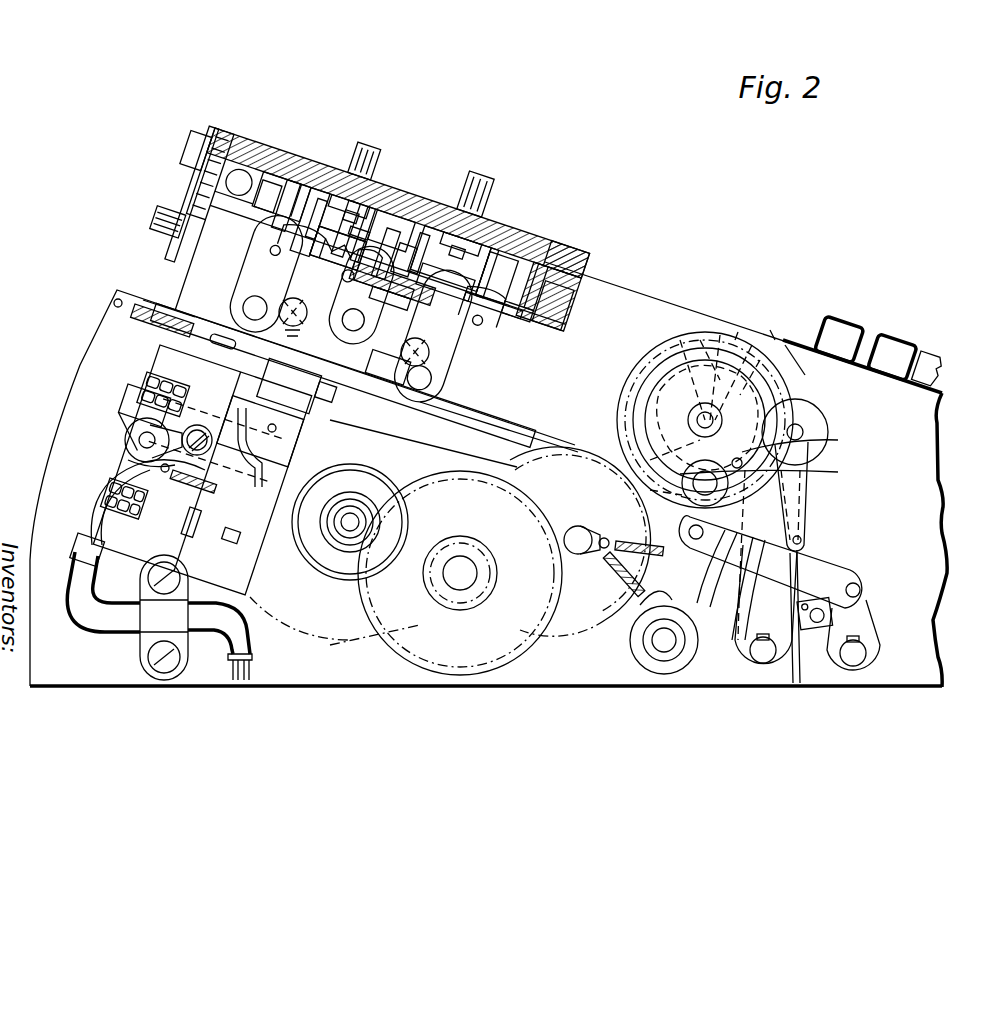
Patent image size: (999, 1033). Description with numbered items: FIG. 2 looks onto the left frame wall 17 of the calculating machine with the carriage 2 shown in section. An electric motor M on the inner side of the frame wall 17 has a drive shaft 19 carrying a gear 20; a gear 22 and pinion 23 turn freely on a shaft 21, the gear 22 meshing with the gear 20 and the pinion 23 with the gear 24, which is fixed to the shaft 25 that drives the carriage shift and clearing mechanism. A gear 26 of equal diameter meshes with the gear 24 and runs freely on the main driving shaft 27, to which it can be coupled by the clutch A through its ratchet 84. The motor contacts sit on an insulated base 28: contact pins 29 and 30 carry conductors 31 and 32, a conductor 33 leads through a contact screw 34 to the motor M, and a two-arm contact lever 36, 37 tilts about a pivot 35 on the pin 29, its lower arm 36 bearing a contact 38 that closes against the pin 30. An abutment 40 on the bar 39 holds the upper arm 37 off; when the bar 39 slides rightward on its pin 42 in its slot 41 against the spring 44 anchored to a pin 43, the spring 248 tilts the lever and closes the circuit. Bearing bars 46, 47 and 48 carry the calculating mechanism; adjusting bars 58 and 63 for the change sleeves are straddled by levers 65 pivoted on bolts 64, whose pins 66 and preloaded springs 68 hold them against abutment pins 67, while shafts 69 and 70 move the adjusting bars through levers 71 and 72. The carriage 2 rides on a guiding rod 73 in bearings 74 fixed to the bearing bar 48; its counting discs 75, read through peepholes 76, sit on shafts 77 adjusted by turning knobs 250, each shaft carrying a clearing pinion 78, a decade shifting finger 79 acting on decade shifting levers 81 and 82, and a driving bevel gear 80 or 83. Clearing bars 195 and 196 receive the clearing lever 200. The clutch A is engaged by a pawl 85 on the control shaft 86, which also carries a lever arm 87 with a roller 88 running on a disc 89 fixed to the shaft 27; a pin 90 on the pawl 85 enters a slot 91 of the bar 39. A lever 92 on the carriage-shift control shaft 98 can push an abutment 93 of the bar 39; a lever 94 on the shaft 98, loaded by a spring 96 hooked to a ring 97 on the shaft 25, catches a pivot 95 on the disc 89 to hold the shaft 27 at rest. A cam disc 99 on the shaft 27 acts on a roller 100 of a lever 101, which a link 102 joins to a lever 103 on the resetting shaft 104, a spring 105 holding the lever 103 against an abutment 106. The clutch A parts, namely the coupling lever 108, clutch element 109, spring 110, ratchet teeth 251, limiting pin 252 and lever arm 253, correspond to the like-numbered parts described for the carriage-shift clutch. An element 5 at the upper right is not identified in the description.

The carriage 2 is at (263, 133).
The keys 5 is at (945, 350).
The left frame wall 17 is at (100, 350).
The drive shaft 19 is at (345, 548).
The gear 20 is at (355, 515).
The shaft 21 is at (460, 580).
The gear 22 is at (462, 540).
The pinion 23 is at (480, 585).
The gear 24 is at (575, 620).
The shaft 25 is at (582, 545).
The gear 26 is at (640, 378).
The main driving shaft 27 is at (700, 420).
The insulated base 28 is at (143, 408).
The contact pin 29 is at (150, 385).
The contact pin 30 is at (115, 500).
The conductor 31 is at (135, 434).
The conductor 32 is at (105, 548).
The conductor 33 is at (108, 497).
The contact screw 34 is at (195, 452).
The pivot 35 is at (295, 425).
The lower lever arm 36 is at (245, 470).
The upper lever arm 37 is at (207, 460).
The contact 38 is at (225, 530).
The bar 39 is at (500, 437).
The abutment 40 is at (322, 372).
The slot 41 is at (195, 330).
The pin 42 is at (232, 343).
The pin 43 is at (112, 302).
The spring 44 is at (150, 300).
The bearing bar 46 is at (508, 290).
The bearing bar 47 is at (408, 210).
The bearing bar 48 is at (198, 228).
The adjusting bars 58 is at (495, 300).
The adjusting bars 63 is at (348, 269).
The bolts 64 is at (244, 307).
The levers 65 is at (484, 371).
The pins 66 is at (262, 262).
The abutment pins 67 is at (278, 250).
The spring 68 is at (354, 322).
The shaft 69 is at (305, 310).
The shaft 70 is at (420, 375).
The lever 71 is at (333, 245).
The lever 72 is at (394, 287).
The guiding rod 73 is at (240, 176).
The bearings 74 is at (218, 186).
The counting discs 75 is at (323, 166).
The peephole 76 is at (362, 178).
The shafts 77 is at (333, 170).
The clearing pinion 78 is at (385, 205).
The decade shifting finger 79 is at (500, 258).
The driving bevel gear 80 is at (543, 250).
The decade shifting lever 81 is at (513, 268).
The decade shifting lever 82 is at (396, 190).
The bevel gear 83 is at (300, 160).
The ratchet 84 is at (775, 340).
The pawl 85 is at (797, 655).
The control shaft 86 is at (760, 658).
The lever arm 87 is at (745, 610).
The roller 88 is at (822, 428).
The disc 89 is at (665, 365).
The pin 90 is at (805, 532).
The slot 91 is at (800, 508).
The lever 92 is at (705, 598).
The abutment 93 is at (740, 580).
The lever 94 is at (838, 472).
The pivot 95 is at (838, 440).
The spring 96 is at (625, 572).
The ring 97 is at (575, 524).
The control shaft 98 is at (660, 648).
The cam disc 99 is at (650, 365).
The roller 100 is at (688, 495).
The lever 101 is at (640, 615).
The link 102 is at (844, 574).
The lever 103 is at (872, 630).
The shaft 104 is at (854, 660).
The spring 105 is at (640, 545).
The abutment 106 is at (812, 630).
The coupling lever 108 is at (678, 340).
The clutch element 109 is at (650, 490).
The spring 110 is at (640, 428).
The clearing bar 195 is at (283, 160).
The clearing bar 196 is at (436, 210).
The clearing lever 200 is at (412, 200).
The spring 248 is at (184, 485).
The turning knobs 250 is at (358, 148).
The teeth 251 is at (752, 345).
The pin 252 is at (720, 335).
The lever arm 253 is at (795, 385).
The clutch A is at (746, 322).
The electric motor M is at (322, 615).